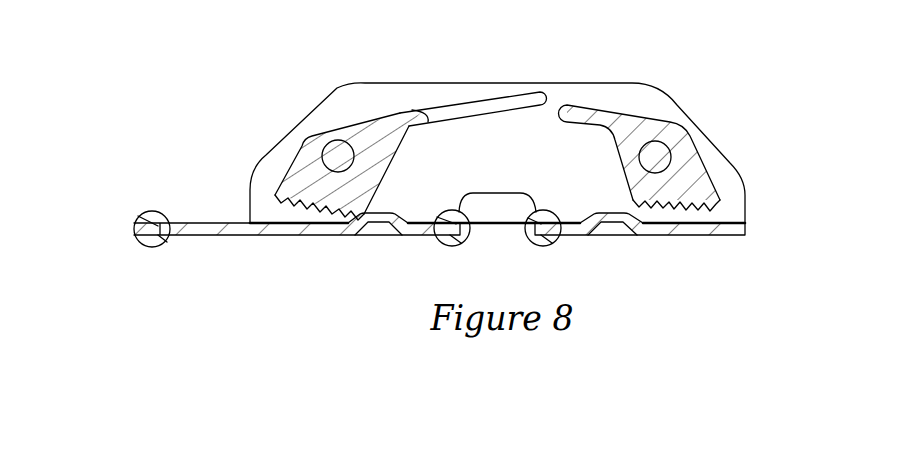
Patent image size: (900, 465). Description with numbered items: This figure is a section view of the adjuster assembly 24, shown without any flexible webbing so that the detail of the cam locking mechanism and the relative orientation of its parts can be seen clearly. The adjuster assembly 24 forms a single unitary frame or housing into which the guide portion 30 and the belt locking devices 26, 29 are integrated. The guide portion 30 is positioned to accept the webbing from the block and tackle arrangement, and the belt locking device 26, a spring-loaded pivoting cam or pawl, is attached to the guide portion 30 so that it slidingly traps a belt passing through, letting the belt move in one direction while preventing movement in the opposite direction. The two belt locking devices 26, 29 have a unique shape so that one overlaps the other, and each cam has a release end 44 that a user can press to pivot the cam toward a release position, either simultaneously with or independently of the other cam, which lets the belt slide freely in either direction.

The adjuster assembly 24 is at (763, 108).
The belt locking device 26 is at (332, 126).
The belt locking device 29 is at (685, 126).
The first guide portion 30 is at (187, 228).
The release end 44 is at (492, 107).